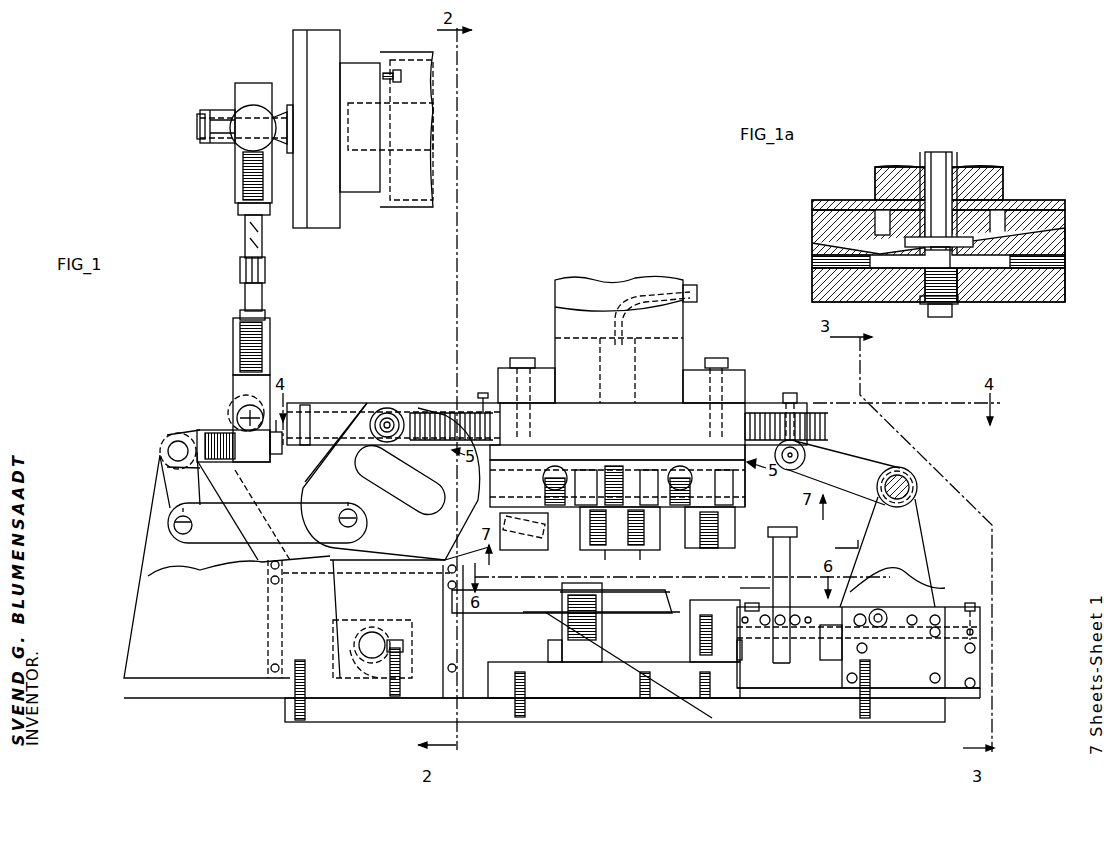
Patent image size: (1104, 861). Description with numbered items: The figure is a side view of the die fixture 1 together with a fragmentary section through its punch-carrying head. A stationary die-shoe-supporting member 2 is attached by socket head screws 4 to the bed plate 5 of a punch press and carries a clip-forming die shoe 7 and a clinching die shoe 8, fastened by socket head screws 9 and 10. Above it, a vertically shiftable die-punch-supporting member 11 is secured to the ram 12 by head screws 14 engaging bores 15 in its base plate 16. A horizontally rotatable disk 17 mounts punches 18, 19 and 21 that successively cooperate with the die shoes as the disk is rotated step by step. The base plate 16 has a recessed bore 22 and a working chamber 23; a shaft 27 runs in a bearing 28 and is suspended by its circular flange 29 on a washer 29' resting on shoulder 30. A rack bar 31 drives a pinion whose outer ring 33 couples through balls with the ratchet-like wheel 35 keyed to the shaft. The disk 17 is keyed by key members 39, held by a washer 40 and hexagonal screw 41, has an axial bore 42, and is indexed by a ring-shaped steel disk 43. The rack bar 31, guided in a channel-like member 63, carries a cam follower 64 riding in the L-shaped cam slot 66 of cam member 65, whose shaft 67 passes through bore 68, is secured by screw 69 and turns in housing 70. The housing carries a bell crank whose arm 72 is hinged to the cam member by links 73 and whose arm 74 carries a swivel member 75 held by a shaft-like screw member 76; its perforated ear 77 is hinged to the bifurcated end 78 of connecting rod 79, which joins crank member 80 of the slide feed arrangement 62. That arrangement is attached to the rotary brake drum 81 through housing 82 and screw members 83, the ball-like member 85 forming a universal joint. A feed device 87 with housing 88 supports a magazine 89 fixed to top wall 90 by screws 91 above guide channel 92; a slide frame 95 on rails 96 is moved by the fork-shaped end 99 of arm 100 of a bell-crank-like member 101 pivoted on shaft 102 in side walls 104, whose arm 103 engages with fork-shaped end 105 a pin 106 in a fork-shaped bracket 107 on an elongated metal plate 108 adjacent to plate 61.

In FIG. 1, the machine 1 is at (163, 451).
In FIG. 1, the stationary die-shoe-supporting member 2 is at (640, 702).
In FIG. 1, the socket head screws 4 is at (514, 684).
In FIG. 1, the bed plate 5 is at (500, 718).
In FIG. 1, the clip-forming die shoe 7 is at (740, 648).
In FIG. 1, the clinching die shoe 8 is at (562, 638).
In FIG. 1, the socket head screws 9 is at (690, 683).
In FIG. 1, the socket head screws 10 is at (578, 680).
In FIG. 1, the die-punch-supporting member 11 is at (750, 470).
In FIG. 1, the ram 12 is at (686, 327).
In FIG. 1, the head screws 14 is at (518, 359).
In FIG. 1, the bores 15 is at (500, 408).
In FIG. 1, the base plate 16 is at (500, 455).
In FIG. 1a, the base plate 16 is at (820, 230).
In FIG. 1, the rotatable disk 17 is at (500, 495).
In FIG. 1a, the rotatable disk 17 is at (1055, 285).
In FIG. 1, the punch 18 is at (595, 551).
In FIG. 1, the punch 19 is at (548, 540).
In FIG. 1, the punch 21 is at (692, 545).
In FIG. 1a, the recessed bore 22 is at (1065, 252).
In FIG. 1a, the working chamber 23 is at (1060, 210).
In FIG. 1a, the shaft 27 is at (946, 160).
In FIG. 1a, the bearing 28 is at (885, 285).
In FIG. 1a, the circular flange 29 is at (865, 205).
In FIG. 1a, the washer 29' is at (1041, 222).
In FIG. 1a, the circular shoulder 30 is at (820, 258).
In FIG. 1, the rack bar 31 is at (431, 412).
In FIG. 1a, the outer ring 33 is at (825, 212).
In FIG. 1a, the ratchet-like wheel 35 is at (1005, 205).
In FIG. 1a, the key members 39 is at (955, 300).
In FIG. 1a, the washer 40 is at (920, 302).
In FIG. 1a, the hexagonal screw 41 is at (940, 318).
In FIG. 1a, the axial bore 42 is at (962, 292).
In FIG. 1a, the ring-shaped steel disk 43 is at (820, 263).
In FIG. 1, the plate 61 is at (662, 405).
In FIG. 1, the slide feed arrangement 62 is at (290, 84).
In FIG. 1, the channel-like member 63 is at (330, 405).
In FIG. 1, the cam follower 64 is at (388, 408).
In FIG. 1, the cam member 65 is at (305, 483).
In FIG. 1, the L-shaped cam slot 66 is at (403, 477).
In FIG. 1, the shaft 67 is at (375, 632).
In FIG. 1, the bore 68 is at (360, 642).
In FIG. 1, the screw 69 is at (403, 646).
In FIG. 1, the housing 70 is at (153, 626).
In FIG. 1, the arm 72 is at (175, 500).
In FIG. 1, the links 73 is at (290, 535).
In FIG. 1, the arm 74 is at (205, 437).
In FIG. 1, the swivel member 75 is at (246, 464).
In FIG. 1, the shaft-like screw member 76 is at (288, 446).
In FIG. 1, the perforated ear 77 is at (241, 410).
In FIG. 1, the bifurcated end 78 is at (237, 374).
In FIG. 1, the connecting rod 79 is at (268, 274).
In FIG. 1, the crank member 80 is at (236, 156).
In FIG. 1, the rotary brake drum 81 is at (397, 52).
In FIG. 1, the housing 82 is at (345, 64).
In FIG. 1, the screw members 83 is at (401, 78).
In FIG. 1, the ball-like member 85 is at (233, 112).
In FIG. 1, the feed device 87 is at (827, 642).
In FIG. 1, the housing 88 is at (945, 600).
In FIG. 1, the magazine 89 is at (797, 548).
In FIG. 1, the top wall 90 is at (745, 606).
In FIG. 1, the screws 91 is at (753, 588).
In FIG. 1, the guide channel 92 is at (912, 632).
In FIG. 1, the slide frame 95 is at (862, 653).
In FIG. 1, the rails 96 is at (868, 628).
In FIG. 1, the fork-shaped end 99 is at (886, 612).
In FIG. 1, the arm 100 is at (843, 540).
In FIG. 1, the bell-crank-like member 101 is at (918, 479).
In FIG. 1, the shaft 102 is at (916, 497).
In FIG. 1, the arm 103 is at (868, 468).
In FIG. 1, the side walls 104 is at (924, 530).
In FIG. 1, the fork-shaped end 105 is at (807, 454).
In FIG. 1, the pin 106 is at (804, 463).
In FIG. 1, the fork-shaped bracket 107 is at (817, 412).
In FIG. 1, the elongated metal plate 108 is at (786, 392).